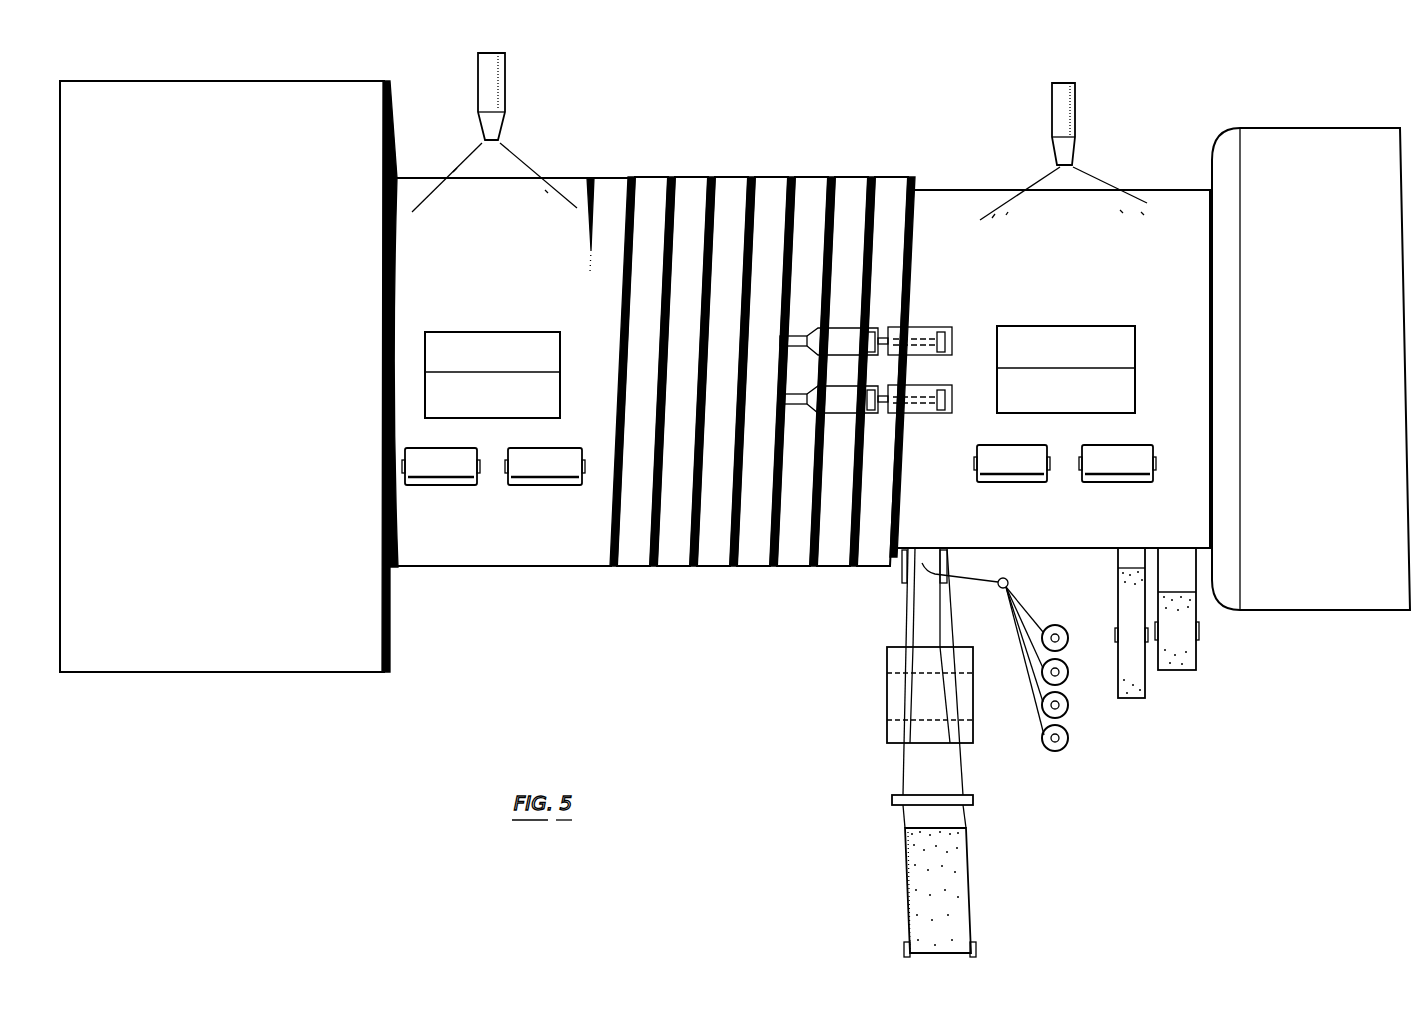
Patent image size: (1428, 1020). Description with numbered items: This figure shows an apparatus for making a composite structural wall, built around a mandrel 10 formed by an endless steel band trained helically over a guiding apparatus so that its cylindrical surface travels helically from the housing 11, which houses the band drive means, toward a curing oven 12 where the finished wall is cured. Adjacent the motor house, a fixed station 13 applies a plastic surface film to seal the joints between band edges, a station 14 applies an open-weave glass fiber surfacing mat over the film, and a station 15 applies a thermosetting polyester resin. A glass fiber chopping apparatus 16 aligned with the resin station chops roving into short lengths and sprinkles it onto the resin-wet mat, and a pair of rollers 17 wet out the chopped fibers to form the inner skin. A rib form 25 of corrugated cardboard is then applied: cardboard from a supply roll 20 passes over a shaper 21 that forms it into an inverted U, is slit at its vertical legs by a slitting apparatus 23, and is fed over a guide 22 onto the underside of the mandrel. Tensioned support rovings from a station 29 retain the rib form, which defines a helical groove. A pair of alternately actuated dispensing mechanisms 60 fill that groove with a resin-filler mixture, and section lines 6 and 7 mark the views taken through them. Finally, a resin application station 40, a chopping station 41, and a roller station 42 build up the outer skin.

The mandrel 10 is at (959, 186).
The housing 11 is at (1291, 123).
The curing oven 12 is at (247, 97).
The fixed station 13 is at (1190, 657).
The station 14 is at (1140, 690).
The station 15 is at (1076, 111).
The glass fiber chopping apparatus 16 is at (1075, 360).
The rollers 17 is at (1097, 482).
The supply roll 20 is at (955, 885).
The shaper 21 is at (887, 713).
The guide 22 is at (904, 584).
The slitting apparatus 23 is at (975, 806).
The rib form 25 is at (903, 250).
The station 29 is at (1068, 742).
The resin application station 40 is at (507, 90).
The chopping station 41 is at (477, 363).
The roller station 42 is at (522, 487).
The dispensing mechanisms 60 is at (938, 326).
The section line 6- 6 is at (810, 437).
The section line 7- 7 is at (806, 497).